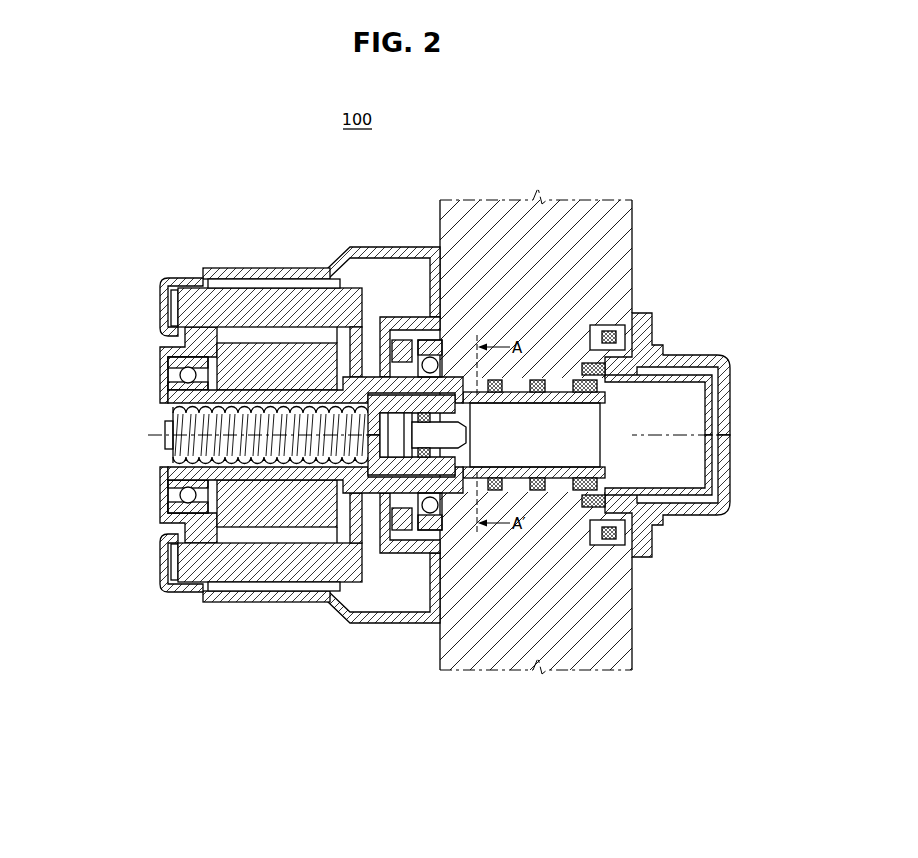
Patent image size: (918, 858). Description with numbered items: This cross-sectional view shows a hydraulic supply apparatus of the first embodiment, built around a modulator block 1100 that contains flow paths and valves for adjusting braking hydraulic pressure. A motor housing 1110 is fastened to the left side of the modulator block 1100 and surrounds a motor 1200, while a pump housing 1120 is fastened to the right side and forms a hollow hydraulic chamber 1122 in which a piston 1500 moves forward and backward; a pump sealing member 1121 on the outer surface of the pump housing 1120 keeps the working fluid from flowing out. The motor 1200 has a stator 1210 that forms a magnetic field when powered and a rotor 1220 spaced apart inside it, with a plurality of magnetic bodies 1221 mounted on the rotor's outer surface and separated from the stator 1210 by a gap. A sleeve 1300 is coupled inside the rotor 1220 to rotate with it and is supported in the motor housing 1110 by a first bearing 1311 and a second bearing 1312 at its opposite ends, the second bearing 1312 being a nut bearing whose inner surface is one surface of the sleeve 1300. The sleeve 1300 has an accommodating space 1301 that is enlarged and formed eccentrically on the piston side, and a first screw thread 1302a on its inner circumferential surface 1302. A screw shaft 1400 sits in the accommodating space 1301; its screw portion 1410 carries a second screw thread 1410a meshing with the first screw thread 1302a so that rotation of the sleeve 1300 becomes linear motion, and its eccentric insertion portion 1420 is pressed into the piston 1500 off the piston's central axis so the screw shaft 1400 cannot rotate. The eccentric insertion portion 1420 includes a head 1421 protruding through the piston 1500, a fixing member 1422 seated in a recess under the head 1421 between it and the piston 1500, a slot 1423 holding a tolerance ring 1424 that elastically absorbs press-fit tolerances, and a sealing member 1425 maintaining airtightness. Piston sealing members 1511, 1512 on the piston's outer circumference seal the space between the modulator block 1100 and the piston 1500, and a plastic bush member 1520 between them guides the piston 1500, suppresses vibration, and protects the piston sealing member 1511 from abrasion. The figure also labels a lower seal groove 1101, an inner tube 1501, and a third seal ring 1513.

The modulator block 1100 is at (608, 639).
The lower seal groove 1101 is at (647, 540).
The motor housing 1110 is at (356, 248).
The pump housing 1120 is at (718, 356).
The pump sealing member 1121 is at (609, 332).
The hydraulic chamber 1122 is at (677, 452).
The motor 1200 is at (182, 437).
The stator 1210 is at (183, 588).
The rotor 1220 is at (187, 522).
The magnetic body 1221 is at (173, 557).
The sleeve 1300 is at (232, 421).
The accommodating space 1301 is at (176, 411).
The inner circumferential surface 1302 is at (247, 388).
The first screw thread 1302a is at (290, 388).
The first bearing 1311 is at (184, 354).
The second bearing 1312 is at (401, 317).
The screw shaft 1400 is at (305, 561).
The screw portion 1410 is at (263, 470).
The second screw thread 1410a is at (200, 483).
The eccentric insertion portion 1420 is at (400, 540).
The head 1421 is at (488, 497).
The fixing member 1422 is at (447, 460).
The slot 1423 is at (385, 466).
The tolerance ring 1424 is at (398, 458).
The sealing member 1425 is at (432, 470).
The piston 1500 is at (448, 394).
The inner tube 1501 is at (472, 398).
The piston sealing member 1511 is at (538, 381).
The piston sealing member 1512 is at (590, 364).
The third seal ring 1513 is at (617, 322).
The bush member 1520 is at (493, 381).